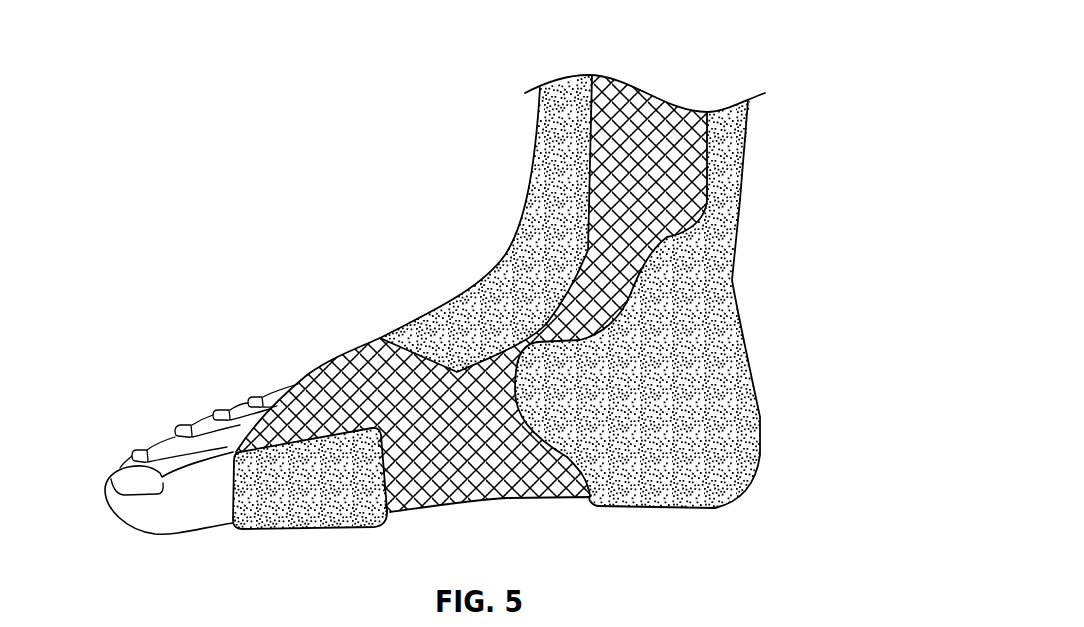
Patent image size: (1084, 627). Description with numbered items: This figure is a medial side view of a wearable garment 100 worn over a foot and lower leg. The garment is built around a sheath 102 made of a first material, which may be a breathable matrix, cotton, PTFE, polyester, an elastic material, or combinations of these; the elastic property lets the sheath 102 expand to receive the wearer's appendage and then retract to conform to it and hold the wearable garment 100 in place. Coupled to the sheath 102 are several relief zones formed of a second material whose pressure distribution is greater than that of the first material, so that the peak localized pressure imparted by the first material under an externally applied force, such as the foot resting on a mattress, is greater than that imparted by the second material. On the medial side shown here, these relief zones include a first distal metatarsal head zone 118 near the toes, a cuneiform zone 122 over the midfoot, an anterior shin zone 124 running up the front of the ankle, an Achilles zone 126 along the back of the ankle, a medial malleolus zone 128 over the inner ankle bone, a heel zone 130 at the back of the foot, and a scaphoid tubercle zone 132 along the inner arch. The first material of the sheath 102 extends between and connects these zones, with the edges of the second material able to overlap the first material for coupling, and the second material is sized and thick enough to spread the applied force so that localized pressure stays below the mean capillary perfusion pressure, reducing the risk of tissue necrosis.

The wearable garment 100 is at (458, 30).
The sheath 102 is at (646, 115).
The first distal metatarsal head zone 118 is at (313, 503).
The cuneiform zone 122 is at (459, 315).
The anterior shin zone 124 is at (552, 102).
The Achilles zone 126 is at (758, 118).
The medial malleolus zone 128 is at (695, 355).
The heel zone 130 is at (776, 439).
The scaphoid tubercle zone 132 is at (558, 408).